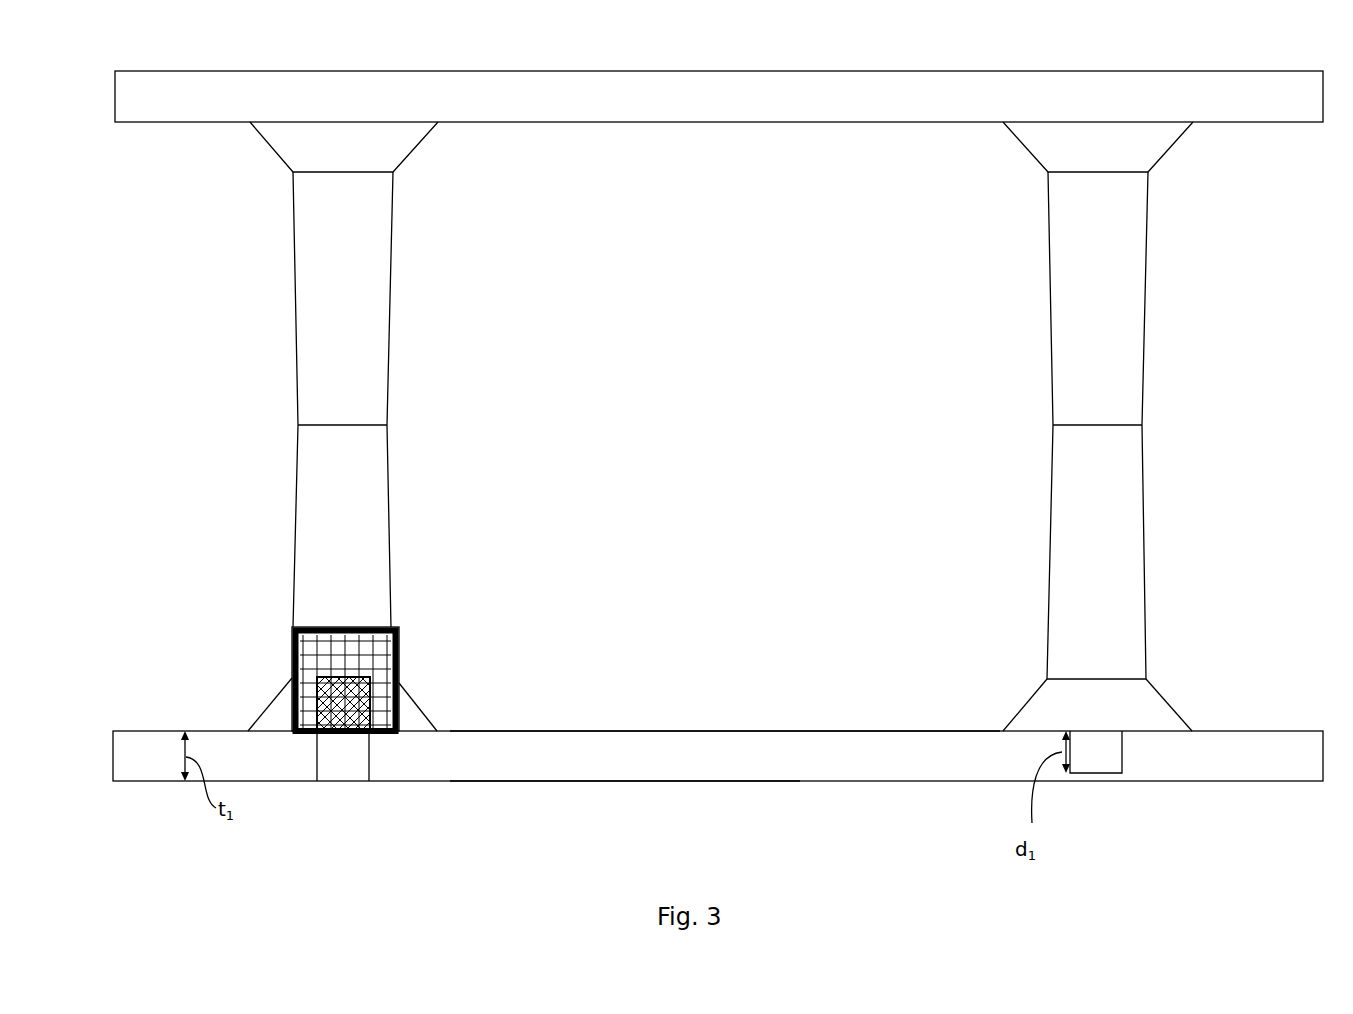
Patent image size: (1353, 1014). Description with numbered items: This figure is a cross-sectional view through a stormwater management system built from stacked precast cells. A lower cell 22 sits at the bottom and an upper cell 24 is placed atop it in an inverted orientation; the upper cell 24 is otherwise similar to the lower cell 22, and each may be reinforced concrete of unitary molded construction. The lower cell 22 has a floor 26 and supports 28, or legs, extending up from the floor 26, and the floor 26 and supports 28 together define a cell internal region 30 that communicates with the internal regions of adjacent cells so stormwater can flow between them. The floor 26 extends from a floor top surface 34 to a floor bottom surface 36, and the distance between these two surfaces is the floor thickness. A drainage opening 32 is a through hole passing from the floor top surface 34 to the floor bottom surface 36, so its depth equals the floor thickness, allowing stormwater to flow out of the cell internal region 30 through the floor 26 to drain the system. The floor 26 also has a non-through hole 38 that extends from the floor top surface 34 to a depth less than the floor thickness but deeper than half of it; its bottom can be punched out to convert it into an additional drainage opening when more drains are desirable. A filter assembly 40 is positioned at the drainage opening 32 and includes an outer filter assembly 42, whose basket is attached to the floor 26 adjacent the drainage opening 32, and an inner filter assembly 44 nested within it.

The lower cell 22 is at (889, 790).
The upper cell 24 is at (856, 66).
The floor 26 is at (822, 730).
The support 28 is at (303, 497).
The cell internal region 30 is at (722, 600).
The drainage opening 32 is at (317, 765).
The floor top surface 34 is at (610, 730).
The floor bottom surface 36 is at (597, 782).
The non-through hole 38 is at (1120, 757).
The filter assembly 40 is at (278, 660).
The outer filter assembly 42 is at (403, 648).
The inner filter assembly 44 is at (376, 705).